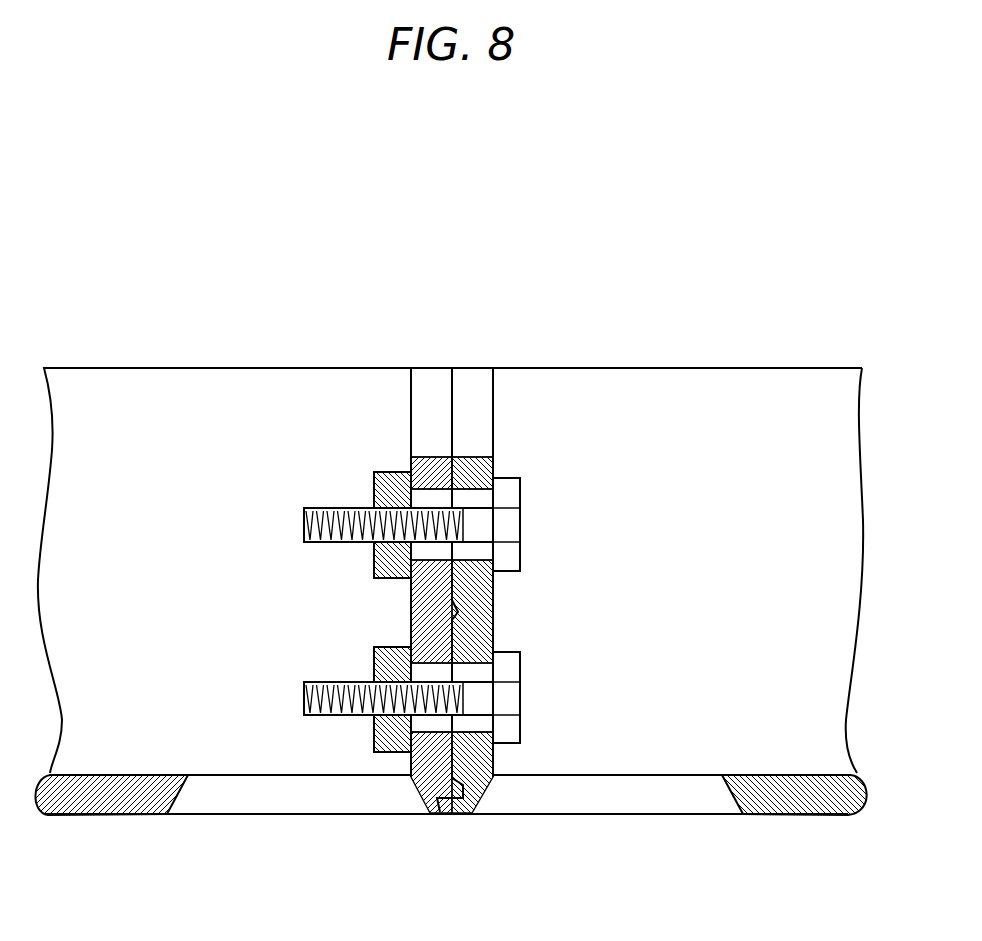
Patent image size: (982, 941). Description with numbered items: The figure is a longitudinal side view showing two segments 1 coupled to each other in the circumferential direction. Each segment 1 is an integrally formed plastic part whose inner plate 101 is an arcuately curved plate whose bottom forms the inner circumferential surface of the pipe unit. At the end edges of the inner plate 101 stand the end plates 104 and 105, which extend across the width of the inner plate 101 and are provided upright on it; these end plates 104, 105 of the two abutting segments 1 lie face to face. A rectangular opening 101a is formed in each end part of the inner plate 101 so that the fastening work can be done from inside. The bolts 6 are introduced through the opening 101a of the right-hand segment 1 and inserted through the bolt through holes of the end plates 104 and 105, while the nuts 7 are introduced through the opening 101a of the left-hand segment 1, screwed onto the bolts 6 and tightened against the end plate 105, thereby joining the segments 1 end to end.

The segment 1 is at (86, 392).
The bolt 6 is at (513, 697).
The nut 7 is at (374, 656).
The inner plate 101 is at (92, 798).
The opening 101a is at (255, 802).
The end plate 104 is at (470, 380).
The end plate 105 is at (438, 408).